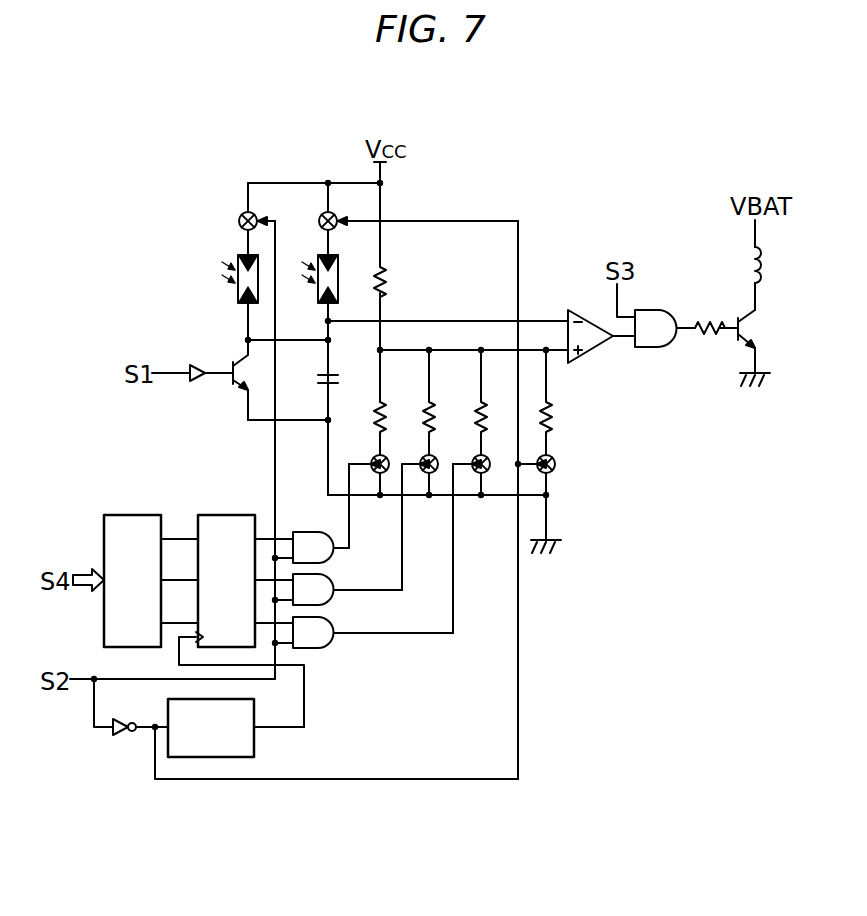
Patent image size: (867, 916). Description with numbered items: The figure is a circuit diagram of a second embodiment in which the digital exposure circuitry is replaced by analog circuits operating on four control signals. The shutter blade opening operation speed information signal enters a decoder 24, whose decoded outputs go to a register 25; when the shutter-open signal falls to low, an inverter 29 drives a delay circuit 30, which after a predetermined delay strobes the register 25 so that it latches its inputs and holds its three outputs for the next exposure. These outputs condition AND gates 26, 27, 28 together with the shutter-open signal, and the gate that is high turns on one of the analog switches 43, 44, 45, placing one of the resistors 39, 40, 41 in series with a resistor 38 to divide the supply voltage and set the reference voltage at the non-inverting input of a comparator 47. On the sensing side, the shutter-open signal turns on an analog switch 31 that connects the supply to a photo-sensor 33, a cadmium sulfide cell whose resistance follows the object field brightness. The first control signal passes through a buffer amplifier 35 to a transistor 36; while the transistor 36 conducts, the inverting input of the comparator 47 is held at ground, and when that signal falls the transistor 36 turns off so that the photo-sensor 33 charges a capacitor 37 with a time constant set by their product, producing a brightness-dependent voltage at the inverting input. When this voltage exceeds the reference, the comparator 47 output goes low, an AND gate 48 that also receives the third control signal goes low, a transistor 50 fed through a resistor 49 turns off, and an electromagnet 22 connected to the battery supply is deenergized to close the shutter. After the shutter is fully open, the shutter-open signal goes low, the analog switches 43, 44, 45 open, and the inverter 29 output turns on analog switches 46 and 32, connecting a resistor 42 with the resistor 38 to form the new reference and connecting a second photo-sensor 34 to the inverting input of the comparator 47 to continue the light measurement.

The electromagnet 22 is at (752, 258).
The decoder 24 is at (130, 514).
The register 25 is at (224, 514).
The AND gate 26 is at (306, 531).
The AND gate 27 is at (337, 582).
The AND gate 28 is at (337, 625).
The inverter 29 is at (120, 735).
The delay circuit 30 is at (256, 742).
The analog switch 31 is at (257, 215).
The analog switch 32 is at (334, 214).
The photo-sensor 33 is at (238, 296).
The photo-sensor 34 is at (318, 296).
The buffer amplifier 35 is at (200, 366).
The transistor 36 is at (240, 382).
The capacitor 37 is at (332, 370).
The resistor 38 is at (387, 274).
The resistor 39 is at (386, 405).
The resistor 40 is at (436, 405).
The resistor 41 is at (487, 405).
The resistor 42 is at (553, 410).
The analog switch 43 is at (387, 457).
The analog switch 44 is at (436, 457).
The analog switch 45 is at (488, 457).
The analog switch 46 is at (555, 458).
The comparator 47 is at (590, 314).
The AND gate 48 is at (660, 310).
The resistor 49 is at (705, 322).
The transistor 50 is at (746, 334).